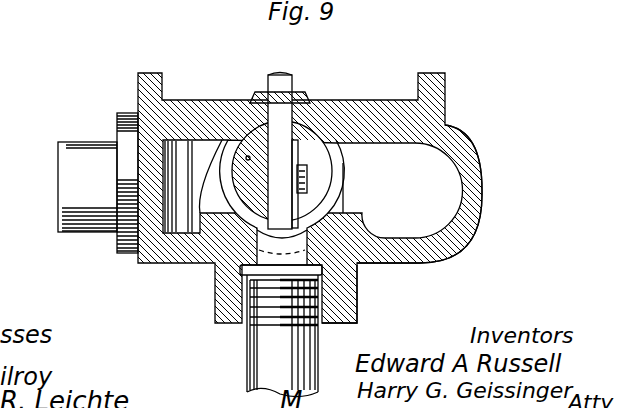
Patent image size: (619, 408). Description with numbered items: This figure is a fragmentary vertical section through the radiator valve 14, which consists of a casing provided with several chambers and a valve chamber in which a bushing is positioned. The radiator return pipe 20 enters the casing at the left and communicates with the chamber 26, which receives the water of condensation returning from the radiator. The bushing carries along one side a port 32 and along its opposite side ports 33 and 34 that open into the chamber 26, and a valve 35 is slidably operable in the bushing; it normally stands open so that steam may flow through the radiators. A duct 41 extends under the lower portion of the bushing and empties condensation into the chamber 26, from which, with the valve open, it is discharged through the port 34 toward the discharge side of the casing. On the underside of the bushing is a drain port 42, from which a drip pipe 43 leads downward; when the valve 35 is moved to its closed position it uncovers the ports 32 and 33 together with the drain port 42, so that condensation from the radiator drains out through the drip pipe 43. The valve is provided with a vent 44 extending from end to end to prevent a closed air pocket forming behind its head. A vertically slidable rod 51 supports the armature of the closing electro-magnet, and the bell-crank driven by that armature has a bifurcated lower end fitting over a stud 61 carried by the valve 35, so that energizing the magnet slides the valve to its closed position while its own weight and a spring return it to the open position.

The radiator valve 14 is at (172, 64).
The radiator return pipe 20 is at (58, 215).
The chamber 26 is at (187, 204).
The port 32 is at (328, 151).
The port 33 is at (216, 195).
The port 34 is at (440, 180).
The valve 35 is at (300, 200).
The duct 41 is at (351, 267).
The drain port 42 is at (262, 237).
The drip pipe 43 is at (263, 355).
The vent 44 is at (246, 156).
The rod 51 is at (284, 155).
The stud 61 is at (307, 173).